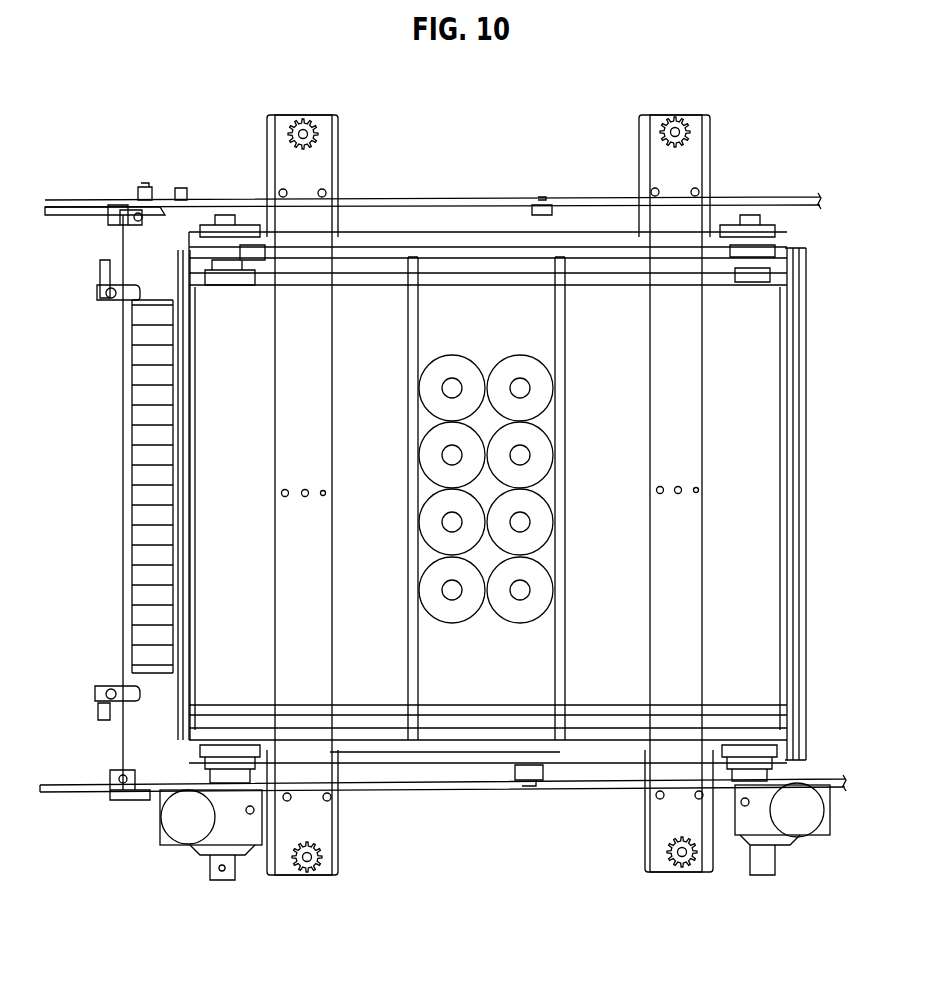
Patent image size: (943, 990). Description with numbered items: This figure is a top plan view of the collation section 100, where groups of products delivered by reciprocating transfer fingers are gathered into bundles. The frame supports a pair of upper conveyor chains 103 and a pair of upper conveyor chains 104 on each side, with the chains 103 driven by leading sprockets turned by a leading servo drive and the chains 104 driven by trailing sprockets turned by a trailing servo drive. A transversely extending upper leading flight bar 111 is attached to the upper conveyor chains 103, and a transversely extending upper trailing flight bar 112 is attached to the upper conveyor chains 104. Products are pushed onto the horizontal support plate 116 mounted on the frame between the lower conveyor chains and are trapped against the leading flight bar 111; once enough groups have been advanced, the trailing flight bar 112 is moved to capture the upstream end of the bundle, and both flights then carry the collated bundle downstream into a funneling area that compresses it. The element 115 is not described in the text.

The collation section 100 is at (480, 170).
The upper conveyor chains 103 is at (535, 742).
The upper conveyor chains 104 is at (465, 733).
The upper leading flight bar 111 is at (565, 722).
The upper trailing flight bar 112 is at (412, 741).
The side frame member 115 is at (775, 461).
The horizontal support plate 116 is at (220, 516).